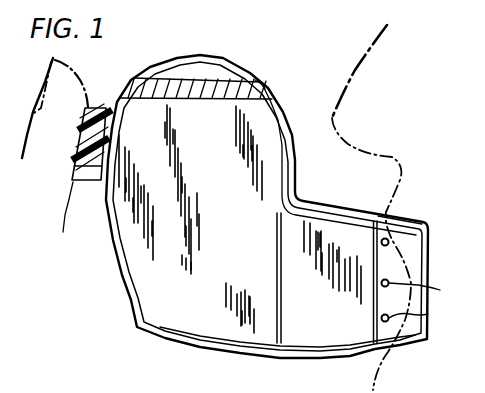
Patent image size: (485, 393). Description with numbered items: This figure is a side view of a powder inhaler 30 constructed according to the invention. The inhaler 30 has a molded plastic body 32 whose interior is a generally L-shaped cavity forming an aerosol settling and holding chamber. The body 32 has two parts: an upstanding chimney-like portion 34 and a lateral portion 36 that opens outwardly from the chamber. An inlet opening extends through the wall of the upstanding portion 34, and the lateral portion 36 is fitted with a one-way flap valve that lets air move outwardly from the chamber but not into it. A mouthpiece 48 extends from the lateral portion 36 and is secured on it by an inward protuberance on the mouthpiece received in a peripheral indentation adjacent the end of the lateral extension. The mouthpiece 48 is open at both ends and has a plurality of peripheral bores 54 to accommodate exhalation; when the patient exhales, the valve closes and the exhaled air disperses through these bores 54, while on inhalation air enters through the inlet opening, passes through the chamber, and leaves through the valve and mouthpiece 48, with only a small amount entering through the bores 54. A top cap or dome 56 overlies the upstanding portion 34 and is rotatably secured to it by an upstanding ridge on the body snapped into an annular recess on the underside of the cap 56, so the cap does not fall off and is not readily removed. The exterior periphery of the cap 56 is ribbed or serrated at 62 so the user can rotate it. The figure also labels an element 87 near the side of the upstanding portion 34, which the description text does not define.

The powder inhaler 30 is at (155, 338).
The molded plastic body 32 is at (128, 247).
The upstanding chimney-like portion 34 is at (286, 106).
The lateral portion 36 is at (343, 207).
The mouthpiece 48 is at (413, 224).
The peripheral bores 54 is at (428, 314).
The top cap or dome 56 is at (231, 64).
The ribbed or serrated periphery 62 is at (259, 82).
The strap buckle 87 is at (90, 112).